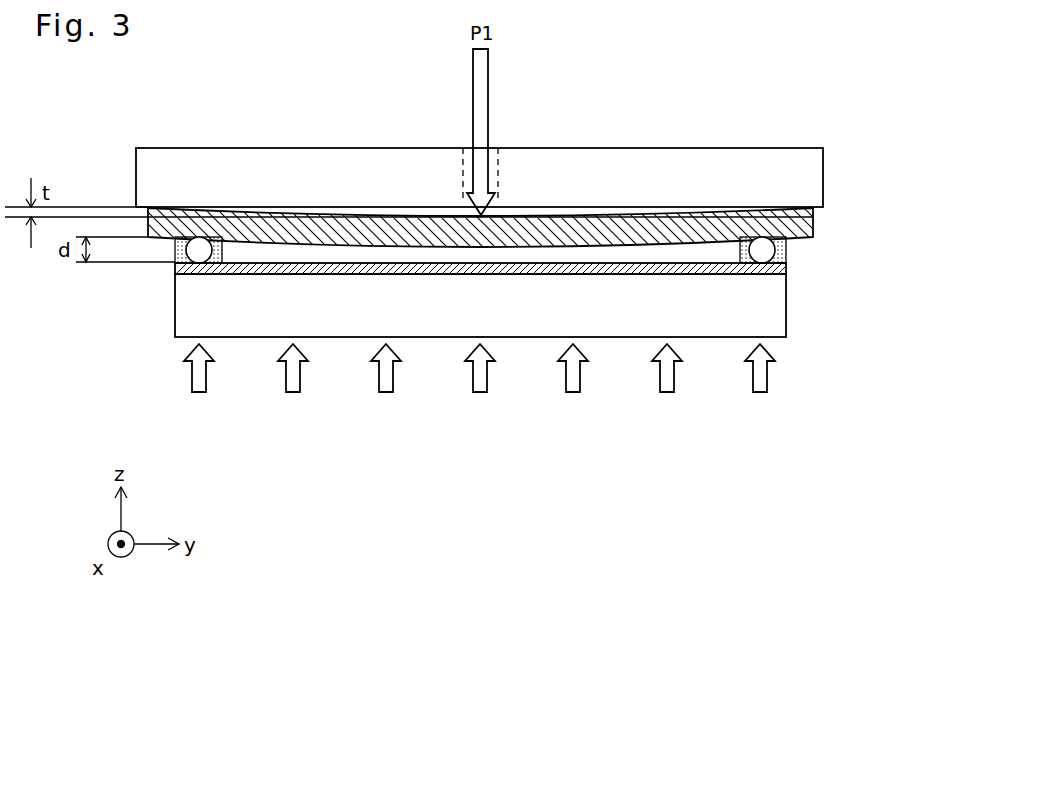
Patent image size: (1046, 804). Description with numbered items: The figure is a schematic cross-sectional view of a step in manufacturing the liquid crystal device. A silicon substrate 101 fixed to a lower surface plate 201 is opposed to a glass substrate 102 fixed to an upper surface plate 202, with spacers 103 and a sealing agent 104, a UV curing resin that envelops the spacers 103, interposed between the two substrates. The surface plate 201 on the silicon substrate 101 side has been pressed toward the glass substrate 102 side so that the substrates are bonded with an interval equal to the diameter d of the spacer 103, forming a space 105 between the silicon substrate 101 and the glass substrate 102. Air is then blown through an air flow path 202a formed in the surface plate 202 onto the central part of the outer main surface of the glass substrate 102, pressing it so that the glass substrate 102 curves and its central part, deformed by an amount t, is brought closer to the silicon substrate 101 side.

The silicon substrate 101 is at (786, 270).
The glass substrate 102 is at (813, 222).
The spacer 103 is at (786, 256).
The sealing agent 104 is at (786, 244).
The space 105 is at (638, 252).
The surface plate 201 is at (786, 318).
The surface plate 202 is at (823, 172).
The air flow path 202a is at (498, 170).